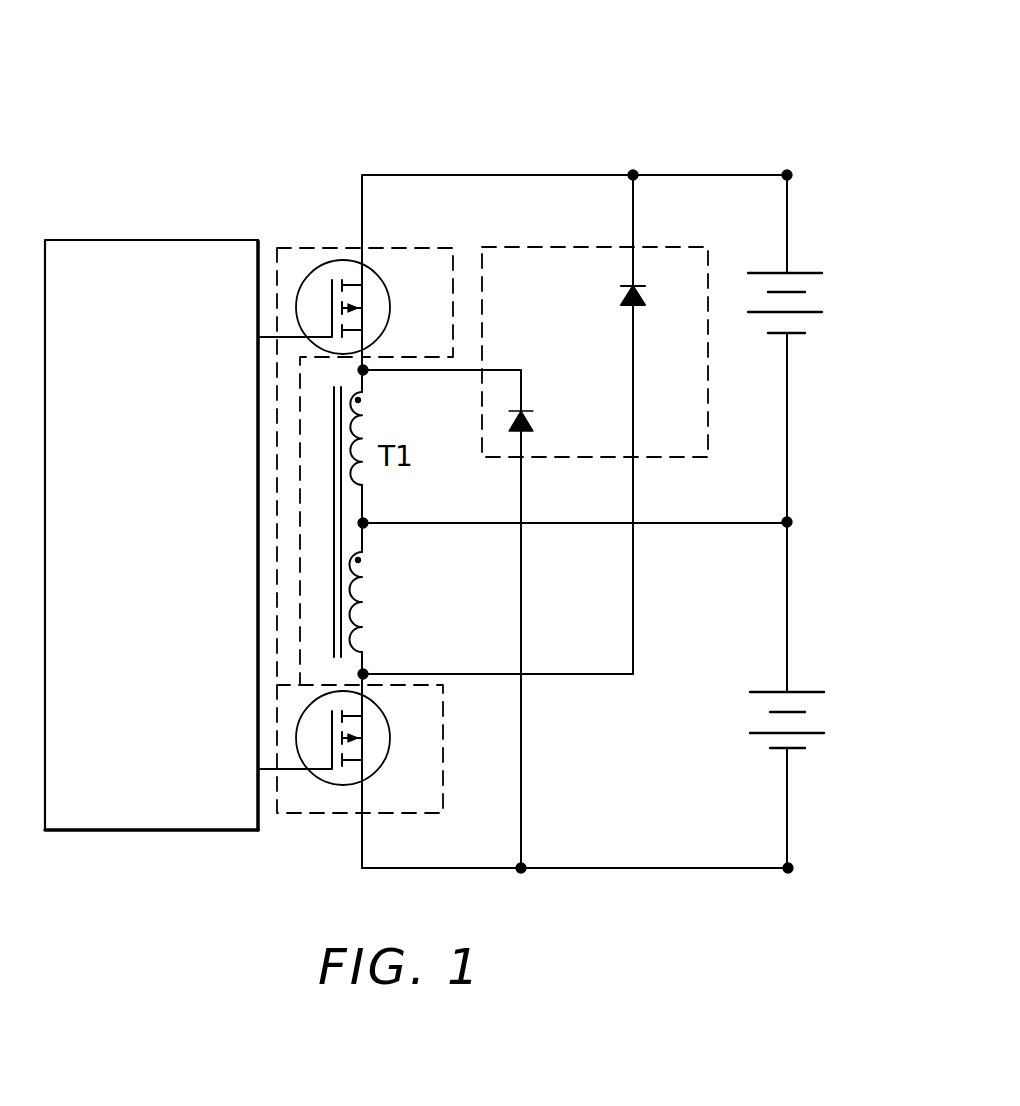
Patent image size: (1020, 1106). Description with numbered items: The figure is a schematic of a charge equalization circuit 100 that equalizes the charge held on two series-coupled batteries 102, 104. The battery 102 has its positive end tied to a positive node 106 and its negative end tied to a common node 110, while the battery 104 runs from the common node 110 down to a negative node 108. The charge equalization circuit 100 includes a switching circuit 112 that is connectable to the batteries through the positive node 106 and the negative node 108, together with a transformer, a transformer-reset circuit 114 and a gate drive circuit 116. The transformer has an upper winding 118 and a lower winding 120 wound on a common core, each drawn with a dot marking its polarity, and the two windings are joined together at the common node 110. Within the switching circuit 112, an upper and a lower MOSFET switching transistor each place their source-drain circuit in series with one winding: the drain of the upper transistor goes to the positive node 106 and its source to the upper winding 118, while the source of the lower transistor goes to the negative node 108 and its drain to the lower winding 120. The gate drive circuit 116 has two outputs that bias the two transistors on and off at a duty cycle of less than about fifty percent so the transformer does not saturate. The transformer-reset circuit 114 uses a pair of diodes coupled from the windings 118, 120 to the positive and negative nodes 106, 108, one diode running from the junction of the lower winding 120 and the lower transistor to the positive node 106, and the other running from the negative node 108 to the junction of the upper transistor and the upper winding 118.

The charge equalization circuit 100 is at (308, 170).
The battery 102 is at (814, 298).
The battery 104 is at (812, 724).
The positive node 106 is at (787, 175).
The negative node 108 is at (788, 868).
The common node 110 is at (787, 522).
The switching circuit 112 is at (413, 250).
The transformer-reset circuit 114 is at (678, 247).
The gate drive circuit 116 is at (120, 260).
The upper winding 118 is at (361, 467).
The lower winding 120 is at (362, 617).